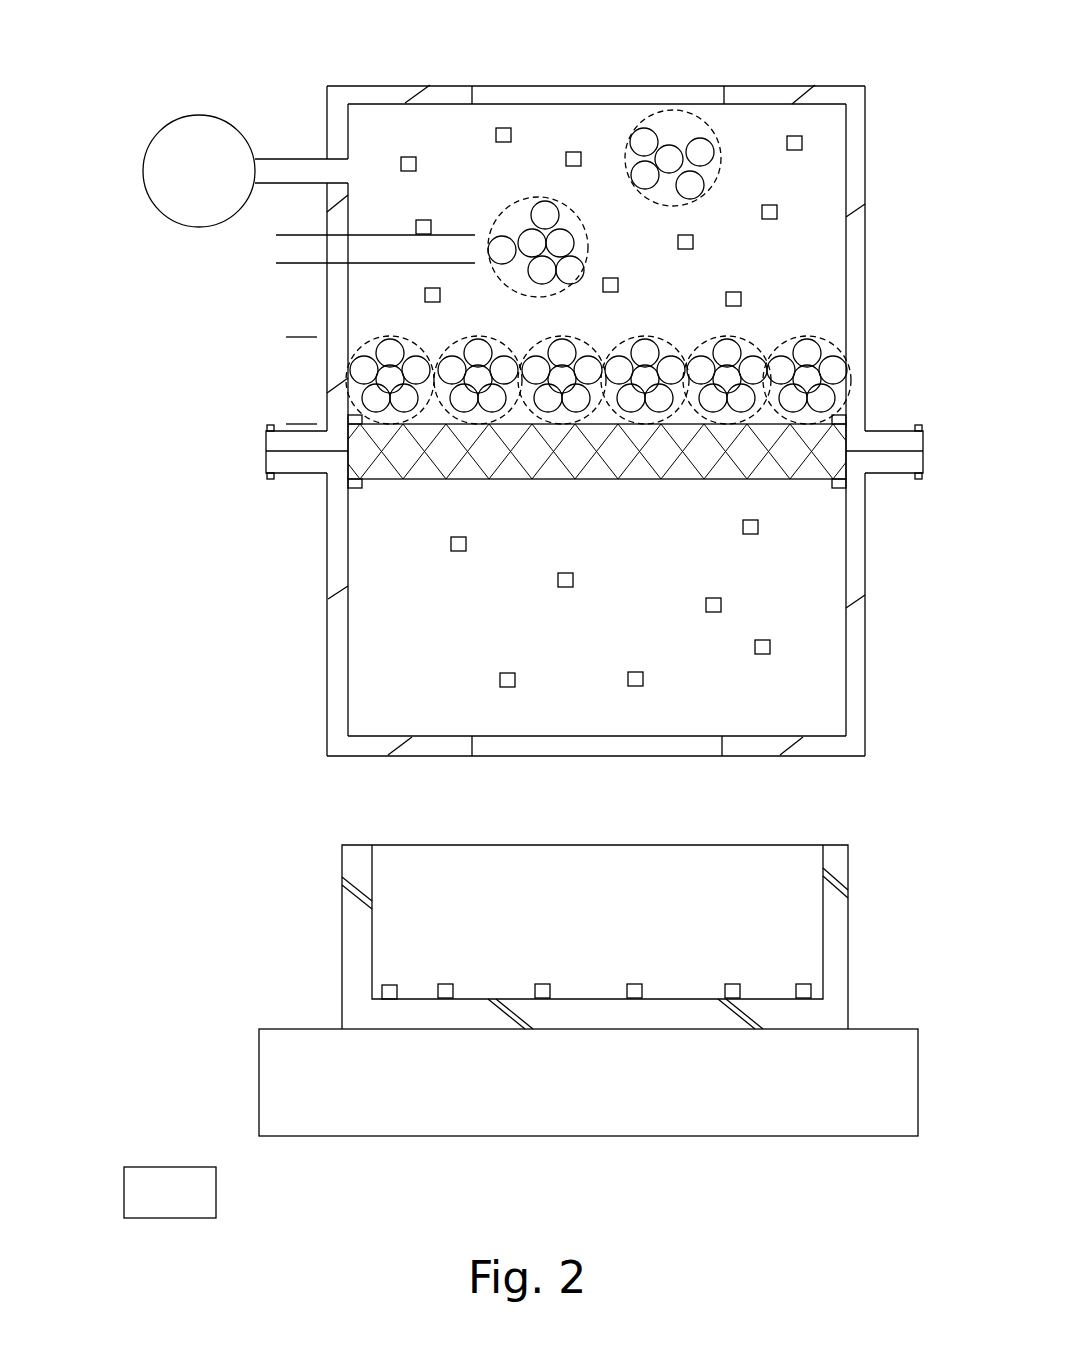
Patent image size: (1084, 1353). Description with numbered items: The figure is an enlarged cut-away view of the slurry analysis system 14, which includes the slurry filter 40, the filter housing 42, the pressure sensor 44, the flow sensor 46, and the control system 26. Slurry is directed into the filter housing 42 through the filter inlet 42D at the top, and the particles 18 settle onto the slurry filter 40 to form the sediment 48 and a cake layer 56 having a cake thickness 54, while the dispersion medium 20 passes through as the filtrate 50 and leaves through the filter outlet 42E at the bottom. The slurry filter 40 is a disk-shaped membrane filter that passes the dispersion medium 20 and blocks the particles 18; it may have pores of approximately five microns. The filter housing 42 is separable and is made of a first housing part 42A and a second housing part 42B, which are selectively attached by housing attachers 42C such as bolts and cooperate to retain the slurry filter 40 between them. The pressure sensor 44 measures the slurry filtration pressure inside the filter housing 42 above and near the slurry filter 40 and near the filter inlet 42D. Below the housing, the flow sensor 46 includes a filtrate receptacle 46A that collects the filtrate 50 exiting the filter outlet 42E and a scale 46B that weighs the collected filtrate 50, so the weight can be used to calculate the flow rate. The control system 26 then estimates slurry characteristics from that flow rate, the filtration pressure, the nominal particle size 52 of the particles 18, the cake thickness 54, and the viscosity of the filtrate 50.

The slurry analysis system 14 is at (866, 52).
The particles 18 is at (777, 212).
The dispersion medium 20 is at (385, 992).
The control system 26 is at (180, 1203).
The slurry filter 40 is at (842, 433).
The filter housing 42 is at (866, 557).
The first housing part 42A is at (327, 323).
The second housing part 42B is at (332, 573).
The housing attachers 42C is at (267, 475).
The filter inlet 42D is at (602, 92).
The filter outlet 42E is at (584, 749).
The pressure sensor 44 is at (145, 168).
The flow sensor 46 is at (346, 862).
The filtrate receptacle 46A is at (358, 933).
The scale 46B is at (287, 1085).
The sediment 48 is at (833, 368).
The filtrate 50 is at (499, 678).
The nominal particle size 52 is at (282, 285).
The cake thickness 54 is at (292, 337).
The cake layer 56 is at (838, 343).